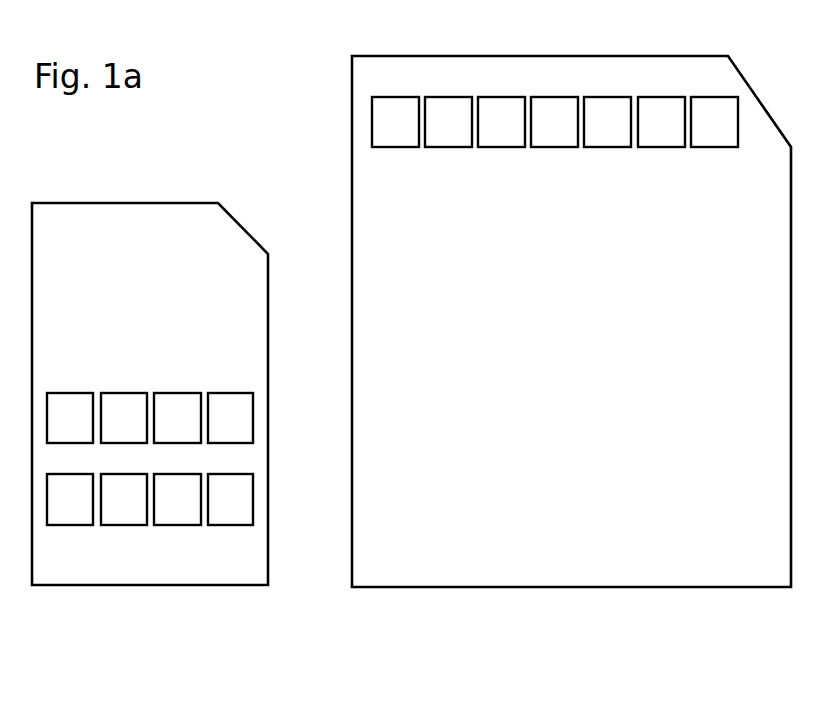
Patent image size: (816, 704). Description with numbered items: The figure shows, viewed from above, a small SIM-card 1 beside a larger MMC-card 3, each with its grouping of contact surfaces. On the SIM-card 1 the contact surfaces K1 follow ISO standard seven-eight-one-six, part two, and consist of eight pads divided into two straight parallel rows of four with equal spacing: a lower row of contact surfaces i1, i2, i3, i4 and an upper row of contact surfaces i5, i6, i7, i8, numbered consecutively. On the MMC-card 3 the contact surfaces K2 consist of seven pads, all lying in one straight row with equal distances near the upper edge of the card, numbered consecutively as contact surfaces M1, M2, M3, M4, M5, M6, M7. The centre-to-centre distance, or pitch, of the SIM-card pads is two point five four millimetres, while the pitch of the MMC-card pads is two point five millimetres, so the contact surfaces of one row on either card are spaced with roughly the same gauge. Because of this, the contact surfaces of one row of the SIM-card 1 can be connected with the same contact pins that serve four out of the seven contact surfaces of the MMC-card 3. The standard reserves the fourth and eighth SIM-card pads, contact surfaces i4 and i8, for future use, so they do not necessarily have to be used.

The SIM-card 1 is at (111, 586).
The MMC-card 3 is at (437, 588).
The contact surfaces of the SIM-card K1 is at (161, 528).
The contact surfaces of the MMC-card K2 is at (477, 84).
The first contact surface of the SIM-card i1 is at (70, 499).
The second contact surface of the SIM-card i2 is at (124, 499).
The third contact surface of the SIM-card i3 is at (177, 499).
The fourth contact surface of the SIM-card i4 is at (230, 499).
The fifth contact surface of the SIM-card i5 is at (70, 418).
The sixth contact surface of the SIM-card i6 is at (124, 418).
The seventh contact surface of the SIM-card i7 is at (177, 418).
The eighth contact surface of the SIM-card i8 is at (230, 418).
The first contact surface of the MMC-card M1 is at (714, 122).
The second contact surface of the MMC-card M2 is at (661, 122).
The third contact surface of the MMC-card M3 is at (607, 122).
The fourth contact surface of the MMC-card M4 is at (554, 122).
The fifth contact surface of the MMC-card M5 is at (501, 122).
The sixth contact surface of the MMC-card M6 is at (448, 122).
The seventh contact surface of the MMC-card M7 is at (395, 122).